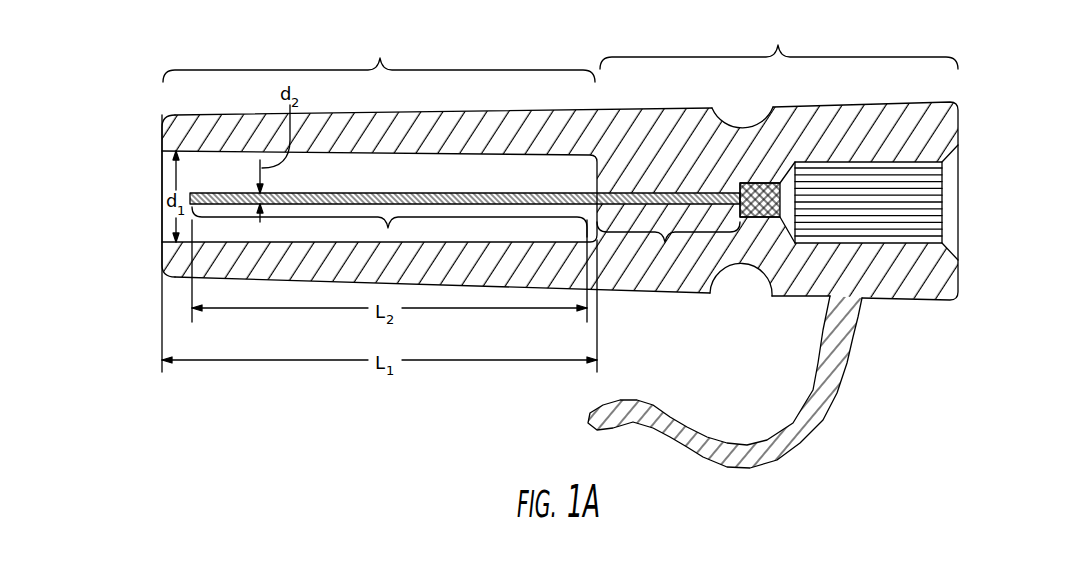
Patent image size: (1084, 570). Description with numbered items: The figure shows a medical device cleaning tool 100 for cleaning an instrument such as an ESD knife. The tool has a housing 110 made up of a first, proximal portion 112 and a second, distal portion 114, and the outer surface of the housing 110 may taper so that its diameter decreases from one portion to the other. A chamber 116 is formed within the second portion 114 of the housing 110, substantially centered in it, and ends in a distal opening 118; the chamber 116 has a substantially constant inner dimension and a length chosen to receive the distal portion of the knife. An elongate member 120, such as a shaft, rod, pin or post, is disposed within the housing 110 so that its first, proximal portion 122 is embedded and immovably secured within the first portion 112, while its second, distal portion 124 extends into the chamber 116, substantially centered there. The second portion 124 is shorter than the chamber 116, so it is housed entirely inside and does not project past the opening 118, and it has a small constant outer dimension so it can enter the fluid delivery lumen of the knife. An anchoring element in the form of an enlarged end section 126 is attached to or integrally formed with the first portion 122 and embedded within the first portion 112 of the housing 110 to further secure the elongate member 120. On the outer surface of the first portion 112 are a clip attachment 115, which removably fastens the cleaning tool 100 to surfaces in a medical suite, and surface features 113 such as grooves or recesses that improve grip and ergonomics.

The medical device cleaning tool 100 is at (117, 17).
The housing 110 is at (665, 292).
The first portion 112 is at (779, 42).
The surface features 113 is at (736, 126).
The second portion 114 is at (379, 54).
The clip attachment 115 is at (745, 458).
The chamber 116 is at (383, 175).
The distal opening 118 is at (153, 224).
The elongate member 120 is at (518, 193).
The first portion of the elongate member 122 is at (665, 282).
The second portion of the elongate member 124 is at (388, 228).
The enlarged end section 126 is at (872, 163).